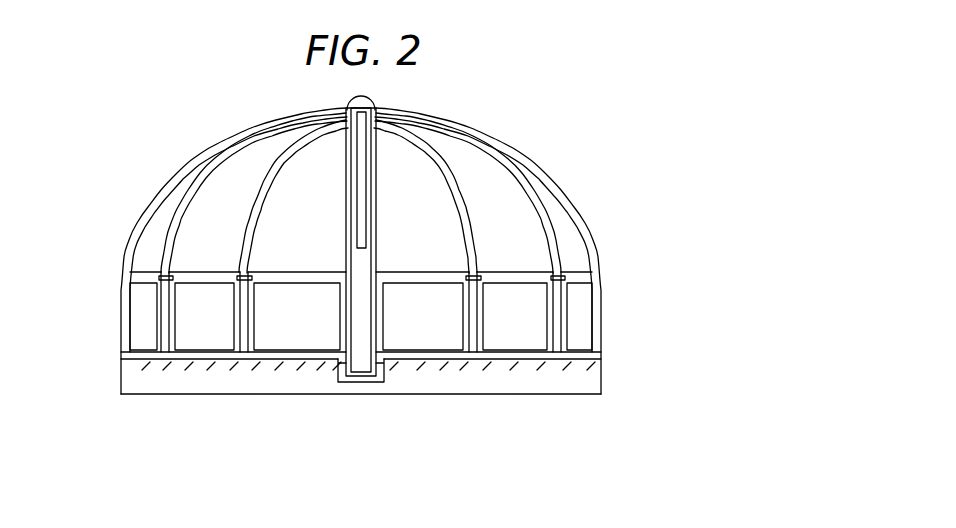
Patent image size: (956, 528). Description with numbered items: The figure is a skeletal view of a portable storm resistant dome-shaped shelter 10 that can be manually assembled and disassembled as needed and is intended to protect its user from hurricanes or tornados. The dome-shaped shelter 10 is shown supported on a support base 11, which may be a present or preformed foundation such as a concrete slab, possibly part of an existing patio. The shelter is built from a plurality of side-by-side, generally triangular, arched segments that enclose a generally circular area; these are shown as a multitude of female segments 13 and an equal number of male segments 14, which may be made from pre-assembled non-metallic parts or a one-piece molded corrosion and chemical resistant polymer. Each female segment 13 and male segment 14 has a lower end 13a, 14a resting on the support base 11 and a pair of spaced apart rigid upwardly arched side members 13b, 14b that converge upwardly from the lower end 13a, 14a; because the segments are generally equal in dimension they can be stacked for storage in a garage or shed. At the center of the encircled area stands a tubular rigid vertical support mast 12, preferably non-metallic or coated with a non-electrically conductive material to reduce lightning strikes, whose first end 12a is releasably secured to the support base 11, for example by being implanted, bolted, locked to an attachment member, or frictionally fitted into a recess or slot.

The portable storm resistant dome-shaped shelter 10 is at (587, 164).
The support base 11 is at (118, 392).
The tubular rigid vertical support mast 12 is at (379, 315).
The first end 12a is at (358, 382).
The female segment 13 is at (250, 320).
The lower end 13a is at (317, 357).
The upwardly arched side member 13b is at (262, 237).
The male segment 14 is at (172, 322).
The lower end 14a is at (206, 356).
The upwardly arched side member 14b is at (247, 213).